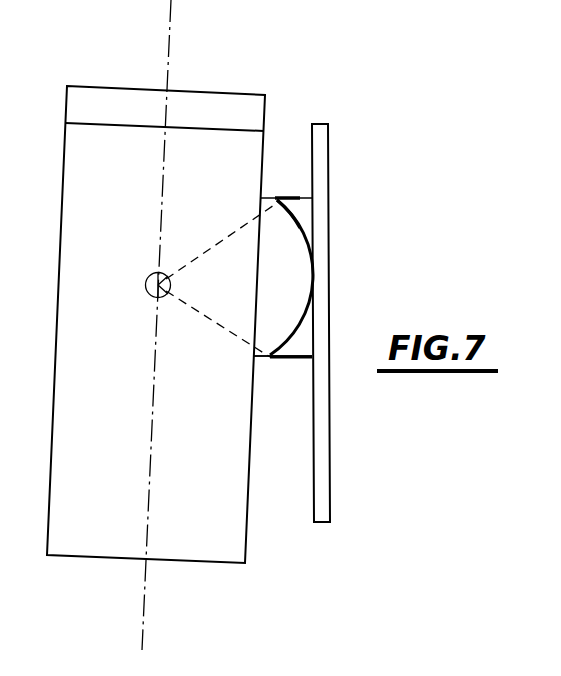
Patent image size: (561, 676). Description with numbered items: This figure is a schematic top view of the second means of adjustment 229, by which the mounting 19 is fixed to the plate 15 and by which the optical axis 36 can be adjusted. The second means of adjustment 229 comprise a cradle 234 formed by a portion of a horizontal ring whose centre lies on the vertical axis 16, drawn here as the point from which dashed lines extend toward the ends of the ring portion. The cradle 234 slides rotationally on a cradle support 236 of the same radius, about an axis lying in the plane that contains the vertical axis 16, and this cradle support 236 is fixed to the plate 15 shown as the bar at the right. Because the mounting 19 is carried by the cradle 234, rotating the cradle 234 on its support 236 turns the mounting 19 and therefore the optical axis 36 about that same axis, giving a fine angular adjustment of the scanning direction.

The mounting 19 is at (113, 86).
The optical axis 36 is at (144, 597).
The vertical axis 16 is at (145, 284).
The cradle 234 is at (270, 257).
The cradle support 236 is at (302, 210).
The second means of adjustment 229 is at (270, 392).
The plate 15 is at (322, 163).